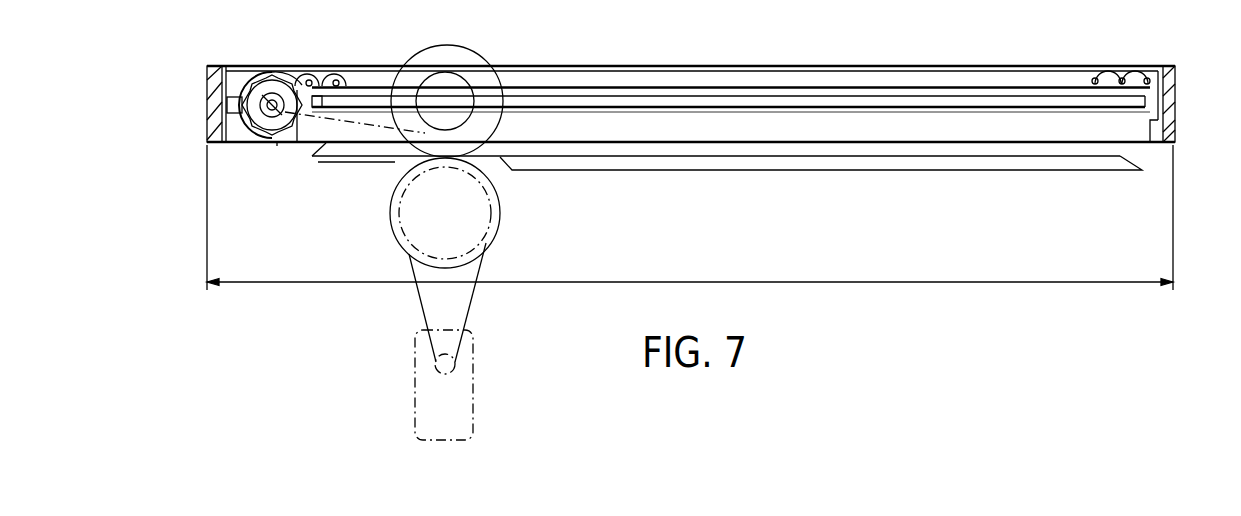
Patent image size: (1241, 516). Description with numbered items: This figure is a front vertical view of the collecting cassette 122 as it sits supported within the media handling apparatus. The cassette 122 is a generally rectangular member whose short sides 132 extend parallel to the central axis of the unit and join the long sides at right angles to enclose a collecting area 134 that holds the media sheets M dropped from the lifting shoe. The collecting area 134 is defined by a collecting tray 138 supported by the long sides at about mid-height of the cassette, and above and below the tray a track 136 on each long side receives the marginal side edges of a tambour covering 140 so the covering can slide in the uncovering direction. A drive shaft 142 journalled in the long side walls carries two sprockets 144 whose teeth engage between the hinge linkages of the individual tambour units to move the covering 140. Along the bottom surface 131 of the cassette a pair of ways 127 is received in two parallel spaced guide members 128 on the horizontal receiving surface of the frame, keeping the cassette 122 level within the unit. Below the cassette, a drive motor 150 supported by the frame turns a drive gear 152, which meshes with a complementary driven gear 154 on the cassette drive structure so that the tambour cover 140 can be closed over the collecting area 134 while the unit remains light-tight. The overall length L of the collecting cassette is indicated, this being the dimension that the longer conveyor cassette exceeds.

The collecting cassette 122 is at (788, 57).
The ways 127 is at (360, 158).
The guide members 128 is at (723, 171).
The bottom surface 131 is at (283, 147).
The short sides 132 is at (210, 103).
The collecting area 134 is at (590, 96).
The track 136 is at (905, 122).
The collecting tray 138 is at (672, 94).
The tambour covering 140 is at (316, 74).
The drive shaft 142 is at (300, 67).
The sprockets 144 is at (272, 72).
The drive motor 150 is at (476, 381).
The drive gear 152 is at (497, 243).
The driven gear 154 is at (455, 46).
The media sheets M is at (990, 86).
The length of the collecting cassette L is at (740, 266).